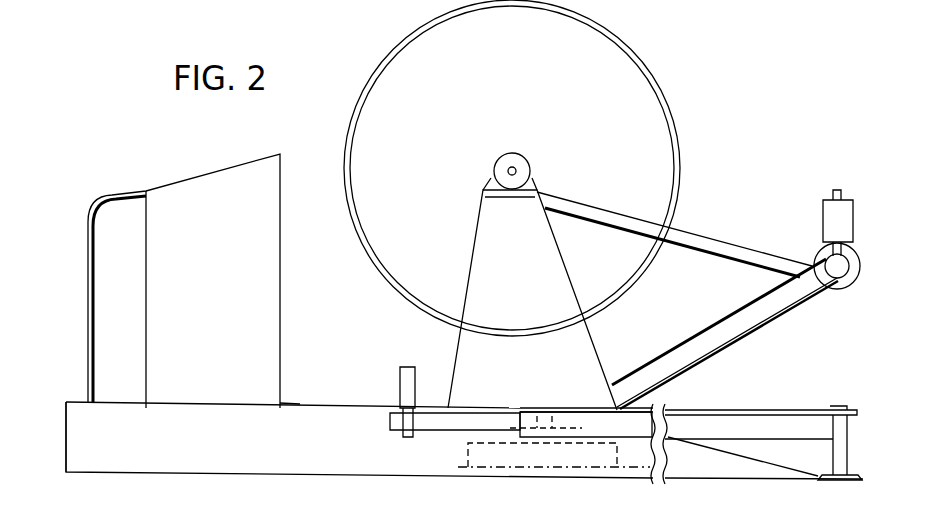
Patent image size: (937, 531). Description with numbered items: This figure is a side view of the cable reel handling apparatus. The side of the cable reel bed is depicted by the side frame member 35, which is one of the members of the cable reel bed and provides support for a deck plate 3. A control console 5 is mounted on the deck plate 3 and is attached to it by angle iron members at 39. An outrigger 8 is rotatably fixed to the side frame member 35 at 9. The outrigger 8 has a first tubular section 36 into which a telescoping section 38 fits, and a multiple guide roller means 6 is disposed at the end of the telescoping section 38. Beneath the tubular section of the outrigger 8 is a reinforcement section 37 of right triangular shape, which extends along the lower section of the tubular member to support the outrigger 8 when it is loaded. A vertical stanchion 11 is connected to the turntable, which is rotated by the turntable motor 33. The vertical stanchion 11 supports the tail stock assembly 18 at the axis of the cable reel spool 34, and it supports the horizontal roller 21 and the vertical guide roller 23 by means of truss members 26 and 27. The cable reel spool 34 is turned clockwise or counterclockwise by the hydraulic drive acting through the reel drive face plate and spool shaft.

The deck plate 3 is at (365, 403).
The control console 5 is at (216, 376).
The multiple guide roller means 6 is at (407, 392).
The outrigger 8 is at (737, 432).
The pivot point 9 is at (838, 430).
The vertical stanchion 11 is at (573, 378).
The tail stock assembly 18 is at (517, 163).
The horizontal roller 21 is at (855, 290).
The vertical guide roller 23 is at (844, 210).
The truss member 26 is at (724, 331).
The truss member 27 is at (735, 262).
The turntable motor 33 is at (534, 460).
The cable reel spool 34 is at (625, 75).
The side frame member 35 is at (117, 440).
The first tubular section 36 is at (703, 428).
The reinforcement section 37 is at (787, 455).
The telescoping section 38 is at (487, 428).
The angle iron members 39 is at (318, 375).